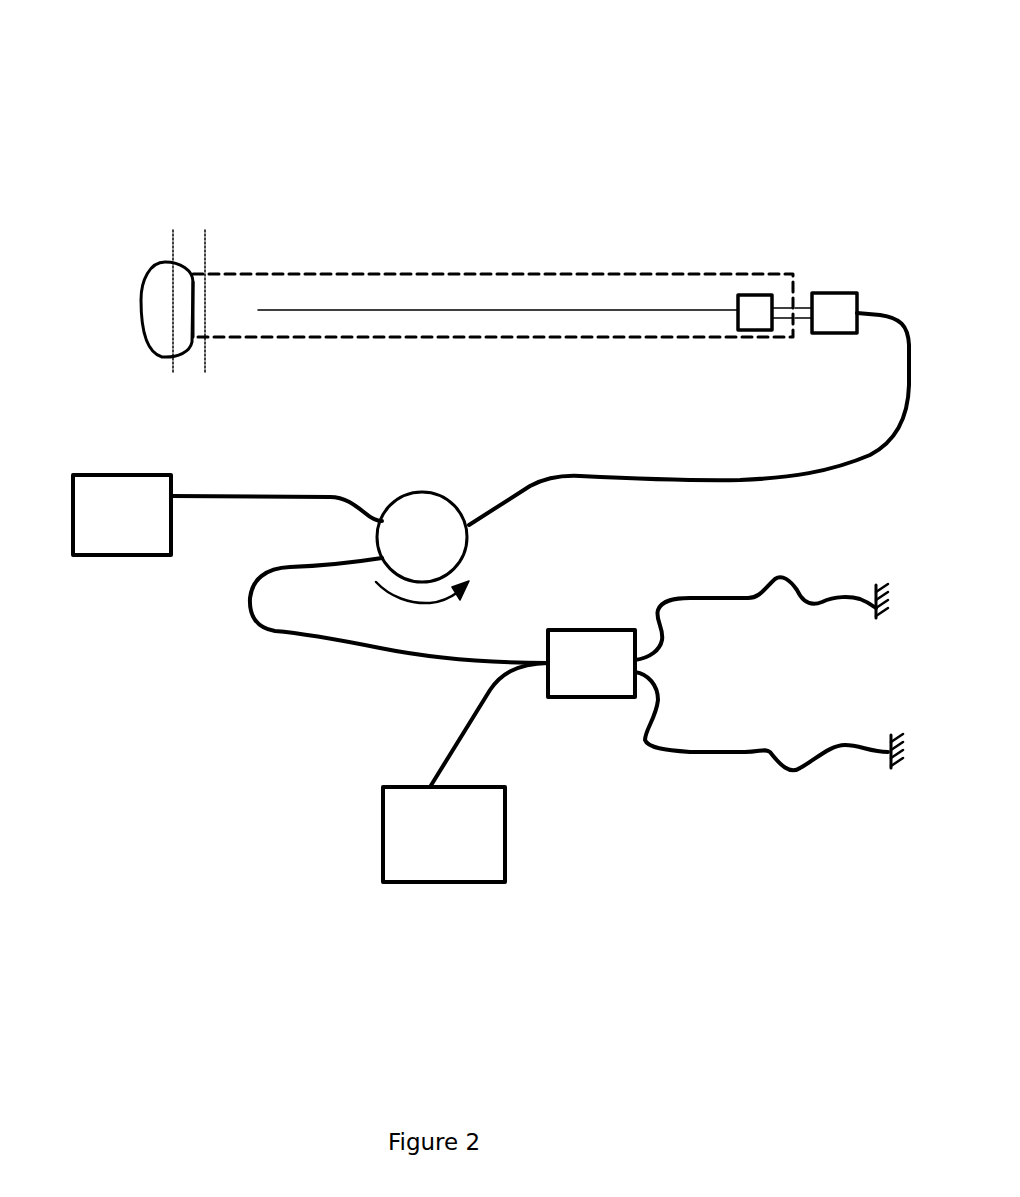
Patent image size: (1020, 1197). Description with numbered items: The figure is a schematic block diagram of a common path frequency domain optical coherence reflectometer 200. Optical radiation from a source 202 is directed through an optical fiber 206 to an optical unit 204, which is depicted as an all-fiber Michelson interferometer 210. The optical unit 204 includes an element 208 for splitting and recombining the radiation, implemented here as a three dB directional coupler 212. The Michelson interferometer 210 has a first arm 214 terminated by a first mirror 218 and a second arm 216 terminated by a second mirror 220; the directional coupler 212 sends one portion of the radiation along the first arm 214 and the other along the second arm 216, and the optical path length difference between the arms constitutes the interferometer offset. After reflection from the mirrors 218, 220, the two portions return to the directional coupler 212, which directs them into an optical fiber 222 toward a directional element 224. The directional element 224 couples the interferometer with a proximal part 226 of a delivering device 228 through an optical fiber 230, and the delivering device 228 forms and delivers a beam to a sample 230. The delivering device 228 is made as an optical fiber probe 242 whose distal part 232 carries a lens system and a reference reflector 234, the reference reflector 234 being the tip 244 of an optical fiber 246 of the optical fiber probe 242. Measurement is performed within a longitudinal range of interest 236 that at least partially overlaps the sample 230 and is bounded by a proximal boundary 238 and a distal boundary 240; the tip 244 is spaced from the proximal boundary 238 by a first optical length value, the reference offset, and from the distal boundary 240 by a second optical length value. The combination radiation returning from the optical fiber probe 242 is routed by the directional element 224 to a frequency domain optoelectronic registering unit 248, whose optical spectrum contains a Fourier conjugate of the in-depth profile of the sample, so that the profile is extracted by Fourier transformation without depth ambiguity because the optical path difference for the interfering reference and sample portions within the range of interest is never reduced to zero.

The common path frequency domain optical coherence reflectometer 200 is at (800, 87).
The source 202 is at (444, 834).
The optical unit 204 is at (635, 802).
The optical fiber 206 is at (458, 749).
The element for splitting the optical radiation 208 is at (599, 622).
The Michelson interferometer 210 is at (690, 802).
The directional coupler 212 is at (598, 710).
The first arm 214 is at (790, 575).
The second arm 216 is at (790, 773).
The first mirror 218 is at (880, 575).
The second mirror 220 is at (893, 775).
The optical fiber 222 is at (270, 635).
The directional element 224 is at (382, 508).
The proximal part 226 is at (762, 250).
The delivering device 228 is at (636, 290).
The optical fiber / sample 230 is at (138, 287).
The distal part 232 is at (228, 344).
The reference reflector 234 is at (260, 308).
The longitudinal range of interest 236 is at (193, 252).
The proximal boundary 238 is at (210, 232).
The distal boundary 240 is at (173, 370).
The optical fiber probe 242 is at (470, 290).
The tip 244 is at (262, 308).
The optical fiber 246 is at (561, 306).
The frequency domain optoelectronic registering unit 248 is at (227, 515).